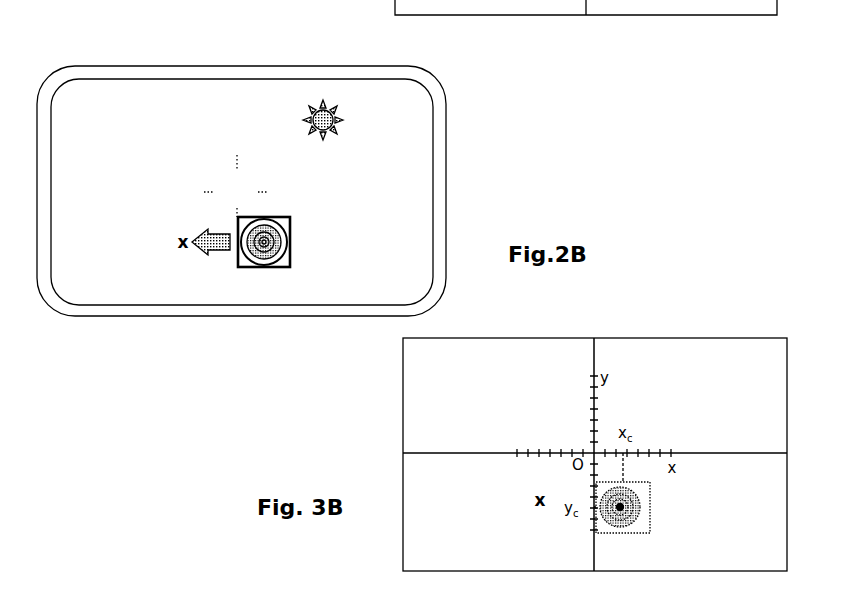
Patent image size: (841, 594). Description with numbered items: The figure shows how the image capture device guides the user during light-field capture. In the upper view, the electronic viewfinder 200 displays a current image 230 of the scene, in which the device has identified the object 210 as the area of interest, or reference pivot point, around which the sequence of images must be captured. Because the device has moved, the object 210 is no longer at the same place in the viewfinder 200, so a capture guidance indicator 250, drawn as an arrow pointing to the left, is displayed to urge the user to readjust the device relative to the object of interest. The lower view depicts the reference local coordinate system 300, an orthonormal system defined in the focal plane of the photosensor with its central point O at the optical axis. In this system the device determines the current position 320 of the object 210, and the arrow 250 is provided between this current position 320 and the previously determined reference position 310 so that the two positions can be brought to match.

In FIG. 2B, the electronic viewfinder 200 is at (440, 118).
In FIG. 2B, the object 210 is at (293, 228).
In FIG. 2B, the current image 230 is at (137, 88).
In FIG. 2B, the capture guidance indicator 250 is at (210, 248).
In FIG. 3B, the reference local coordinate system 300 is at (780, 352).
In FIG. 3B, the reference position 310 is at (527, 0).
In FIG. 3B, the current position 320 is at (633, 505).